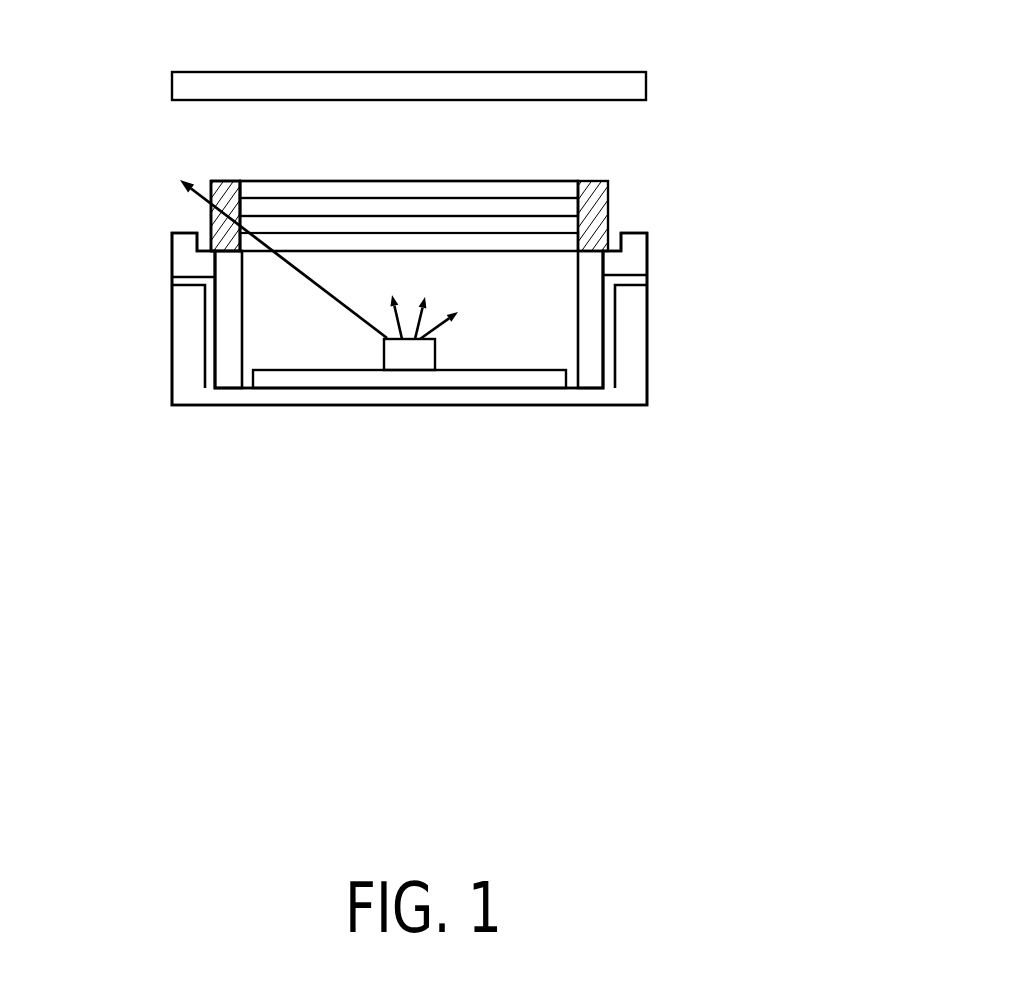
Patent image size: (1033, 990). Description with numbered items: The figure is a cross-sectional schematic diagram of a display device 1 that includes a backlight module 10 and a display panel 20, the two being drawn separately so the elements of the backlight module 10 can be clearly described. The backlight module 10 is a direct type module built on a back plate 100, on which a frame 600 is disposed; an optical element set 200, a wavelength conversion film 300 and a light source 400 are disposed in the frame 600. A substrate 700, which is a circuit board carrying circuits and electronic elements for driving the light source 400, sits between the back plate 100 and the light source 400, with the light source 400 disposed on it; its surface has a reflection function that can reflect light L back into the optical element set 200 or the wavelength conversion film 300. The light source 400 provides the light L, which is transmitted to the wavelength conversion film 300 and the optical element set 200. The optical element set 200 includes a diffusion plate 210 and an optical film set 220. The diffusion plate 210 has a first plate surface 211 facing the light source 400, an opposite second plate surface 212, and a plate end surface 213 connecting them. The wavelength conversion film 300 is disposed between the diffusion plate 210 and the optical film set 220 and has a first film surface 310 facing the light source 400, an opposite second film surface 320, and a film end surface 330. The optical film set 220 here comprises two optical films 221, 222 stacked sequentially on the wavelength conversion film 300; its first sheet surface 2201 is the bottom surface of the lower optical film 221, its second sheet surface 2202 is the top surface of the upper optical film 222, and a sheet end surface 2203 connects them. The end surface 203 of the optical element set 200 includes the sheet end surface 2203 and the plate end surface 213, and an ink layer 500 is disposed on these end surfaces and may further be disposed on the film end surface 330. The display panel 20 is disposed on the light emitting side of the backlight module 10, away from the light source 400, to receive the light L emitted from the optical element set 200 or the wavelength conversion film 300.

The display device 1 is at (98, 33).
The backlight module 10 is at (100, 185).
The display panel 20 is at (628, 88).
The back plate 100 is at (187, 363).
The optical element set 200 is at (825, 147).
The end surface 203 is at (409, 221).
The diffusion plate 210 is at (568, 243).
The first plate surface 211 is at (258, 254).
The second plate surface 212 is at (333, 231).
The plate end surface 213 is at (238, 243).
The optical film set 220 is at (409, 198).
The optical film 221 is at (568, 208).
The optical film 222 is at (568, 183).
The wavelength conversion film 300 is at (388, 226).
The first film surface 310 is at (475, 236).
The second film surface 320 is at (433, 215).
The film end surface 330 is at (238, 229).
The light source 400 is at (410, 358).
The ink layer 500 is at (215, 184).
The frame 600 is at (225, 328).
The substrate 700 is at (373, 380).
The first sheet surface 2201 is at (542, 254).
The second sheet surface 2202 is at (512, 180).
The sheet end surface 2203 is at (238, 204).
The light L is at (343, 303).